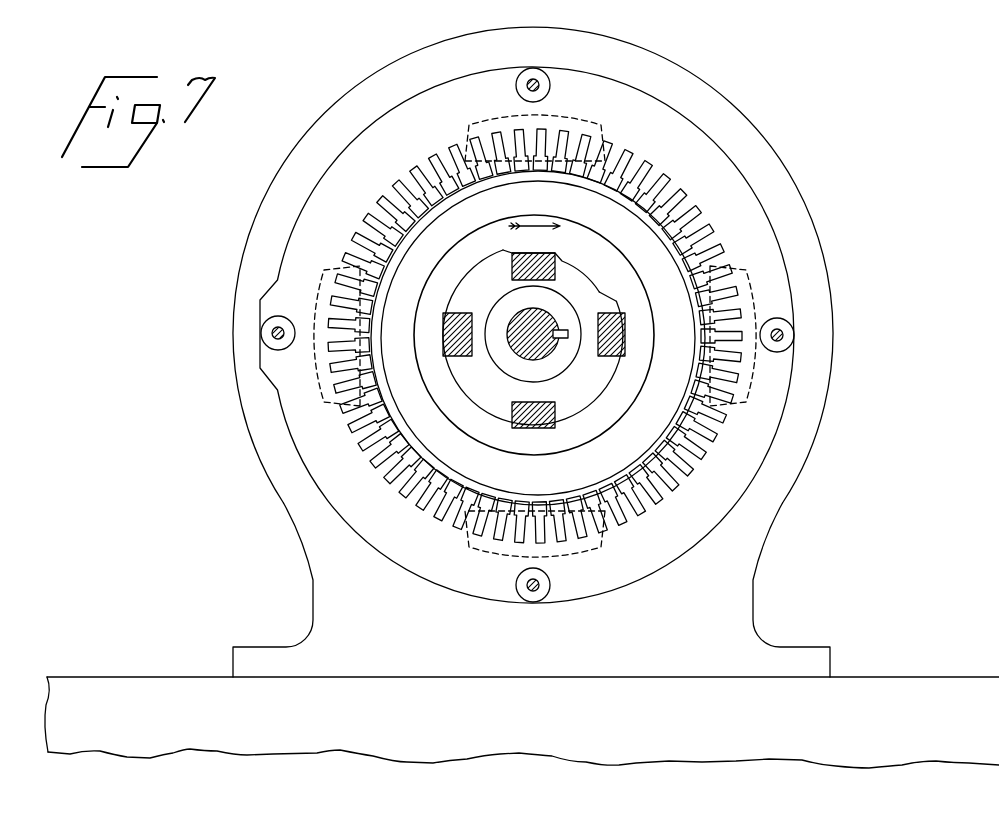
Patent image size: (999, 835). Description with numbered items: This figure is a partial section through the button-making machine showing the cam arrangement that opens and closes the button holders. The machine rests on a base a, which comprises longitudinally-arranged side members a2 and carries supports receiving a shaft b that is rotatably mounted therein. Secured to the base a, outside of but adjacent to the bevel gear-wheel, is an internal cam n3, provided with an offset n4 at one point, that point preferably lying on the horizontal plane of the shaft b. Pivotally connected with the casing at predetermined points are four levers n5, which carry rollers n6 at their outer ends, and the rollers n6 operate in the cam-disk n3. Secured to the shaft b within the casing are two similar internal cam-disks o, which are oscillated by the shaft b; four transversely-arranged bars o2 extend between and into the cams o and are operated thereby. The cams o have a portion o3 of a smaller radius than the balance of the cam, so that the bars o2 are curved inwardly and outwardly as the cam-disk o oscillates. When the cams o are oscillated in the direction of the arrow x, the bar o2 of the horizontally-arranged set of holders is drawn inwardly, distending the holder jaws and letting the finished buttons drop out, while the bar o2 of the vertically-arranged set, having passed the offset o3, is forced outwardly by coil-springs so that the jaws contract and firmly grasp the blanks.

The internal cam n3 is at (366, 128).
The offset n4 is at (253, 353).
The levers n5 is at (517, 89).
The rollers n6 is at (550, 92).
The internal cam-disks o is at (533, 337).
The transversely-arranged bars o2 is at (500, 278).
The portion of smaller radius o3 is at (601, 296).
The shaft b is at (545, 322).
The arrow x is at (534, 237).
The base a is at (522, 722).
The side members a2 is at (523, 702).